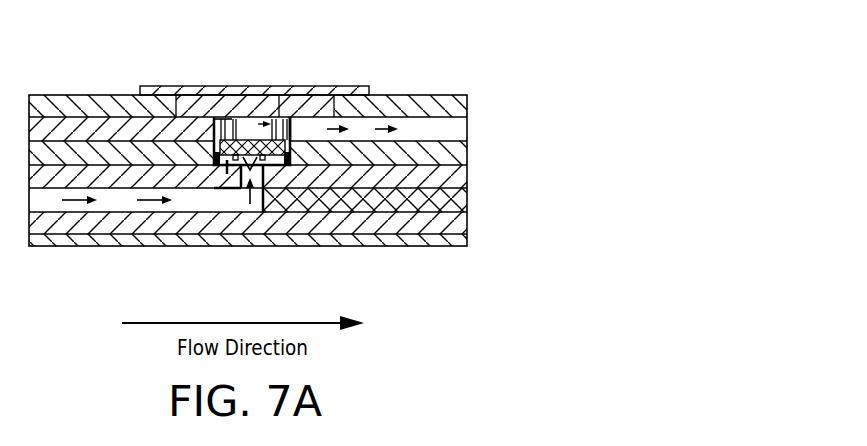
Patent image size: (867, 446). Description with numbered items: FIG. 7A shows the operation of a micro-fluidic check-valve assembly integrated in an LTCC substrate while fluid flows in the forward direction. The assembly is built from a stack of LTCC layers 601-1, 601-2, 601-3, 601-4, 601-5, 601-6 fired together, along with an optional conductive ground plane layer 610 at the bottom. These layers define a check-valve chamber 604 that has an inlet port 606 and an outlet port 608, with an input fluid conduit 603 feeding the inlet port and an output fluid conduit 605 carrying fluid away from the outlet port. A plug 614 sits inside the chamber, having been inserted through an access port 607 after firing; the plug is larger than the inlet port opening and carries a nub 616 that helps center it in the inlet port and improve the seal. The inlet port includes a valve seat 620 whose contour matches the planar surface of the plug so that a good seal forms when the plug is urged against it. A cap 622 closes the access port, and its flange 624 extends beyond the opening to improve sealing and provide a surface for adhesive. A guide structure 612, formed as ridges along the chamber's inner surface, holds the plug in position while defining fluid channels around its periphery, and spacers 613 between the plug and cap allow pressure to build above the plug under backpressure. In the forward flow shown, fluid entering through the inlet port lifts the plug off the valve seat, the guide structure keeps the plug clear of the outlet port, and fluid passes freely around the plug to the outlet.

The LTCC layer 601-1 is at (467, 103).
The LTCC layer 601-2 is at (467, 130).
The LTCC layer 601-3 is at (467, 152).
The LTCC layer 601-4 is at (467, 178).
The LTCC layer 601-5 is at (467, 203).
The LTCC layer 601-6 is at (467, 225).
The input fluid conduit 603 is at (186, 200).
The check-valve chamber 604 is at (305, 128).
The output fluid conduit 605 is at (437, 132).
The inlet port 606 is at (265, 172).
The access port 607 is at (175, 114).
The outlet port 608 is at (340, 124).
The conductive ground plane layer 610 is at (427, 238).
The guide structure 612 is at (222, 117).
The spacers 613 is at (228, 117).
The plug 614 is at (255, 140).
The nub 616 is at (253, 162).
The valve seat 620 is at (228, 165).
The cap 622 is at (248, 118).
The flange 624 is at (215, 118).